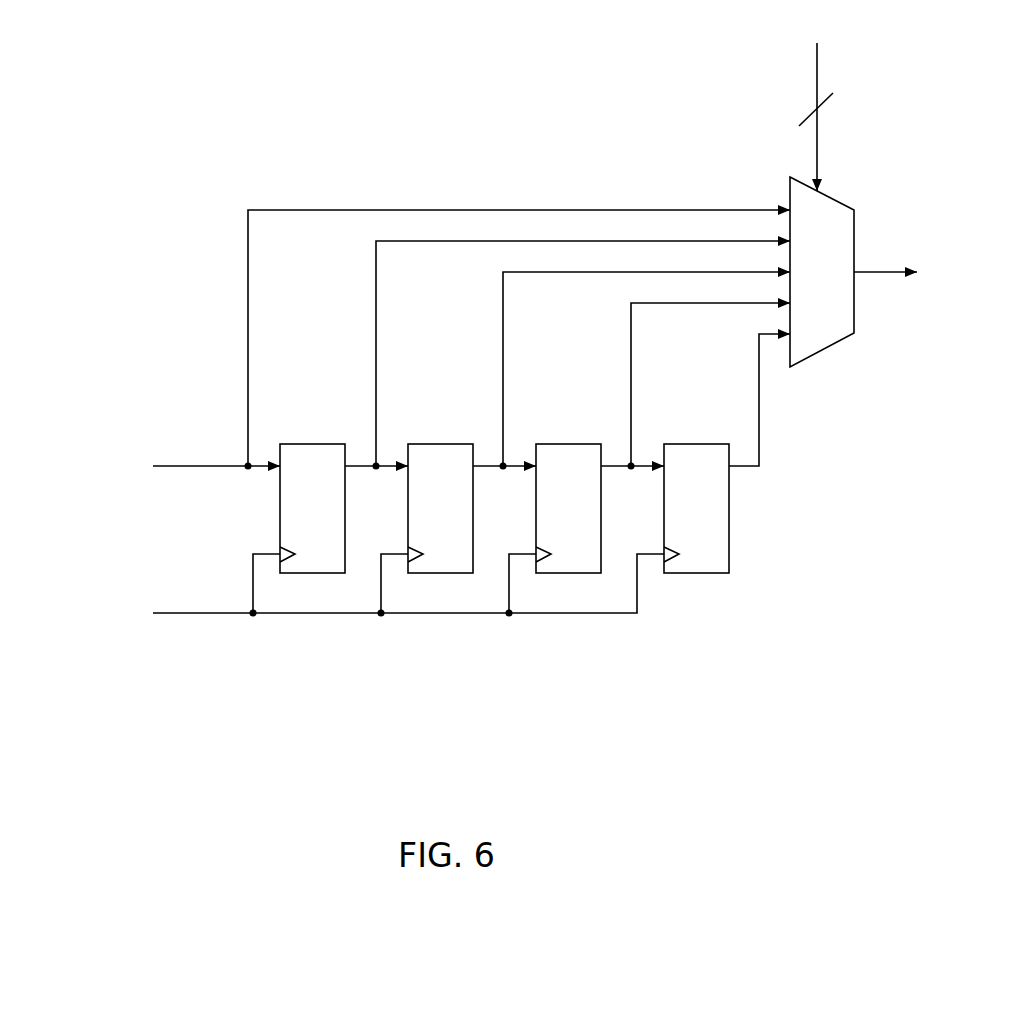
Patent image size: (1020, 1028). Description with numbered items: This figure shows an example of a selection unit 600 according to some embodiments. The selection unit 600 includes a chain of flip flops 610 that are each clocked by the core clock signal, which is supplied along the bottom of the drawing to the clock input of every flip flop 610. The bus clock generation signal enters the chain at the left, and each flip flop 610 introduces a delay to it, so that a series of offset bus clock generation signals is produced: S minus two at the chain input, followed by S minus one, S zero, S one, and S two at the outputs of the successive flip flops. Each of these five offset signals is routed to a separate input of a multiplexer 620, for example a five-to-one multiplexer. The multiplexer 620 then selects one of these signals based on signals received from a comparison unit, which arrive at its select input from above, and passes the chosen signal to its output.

The selection unit 600 is at (444, 68).
The flip flop 610 is at (703, 573).
The multiplexer 620 is at (826, 350).